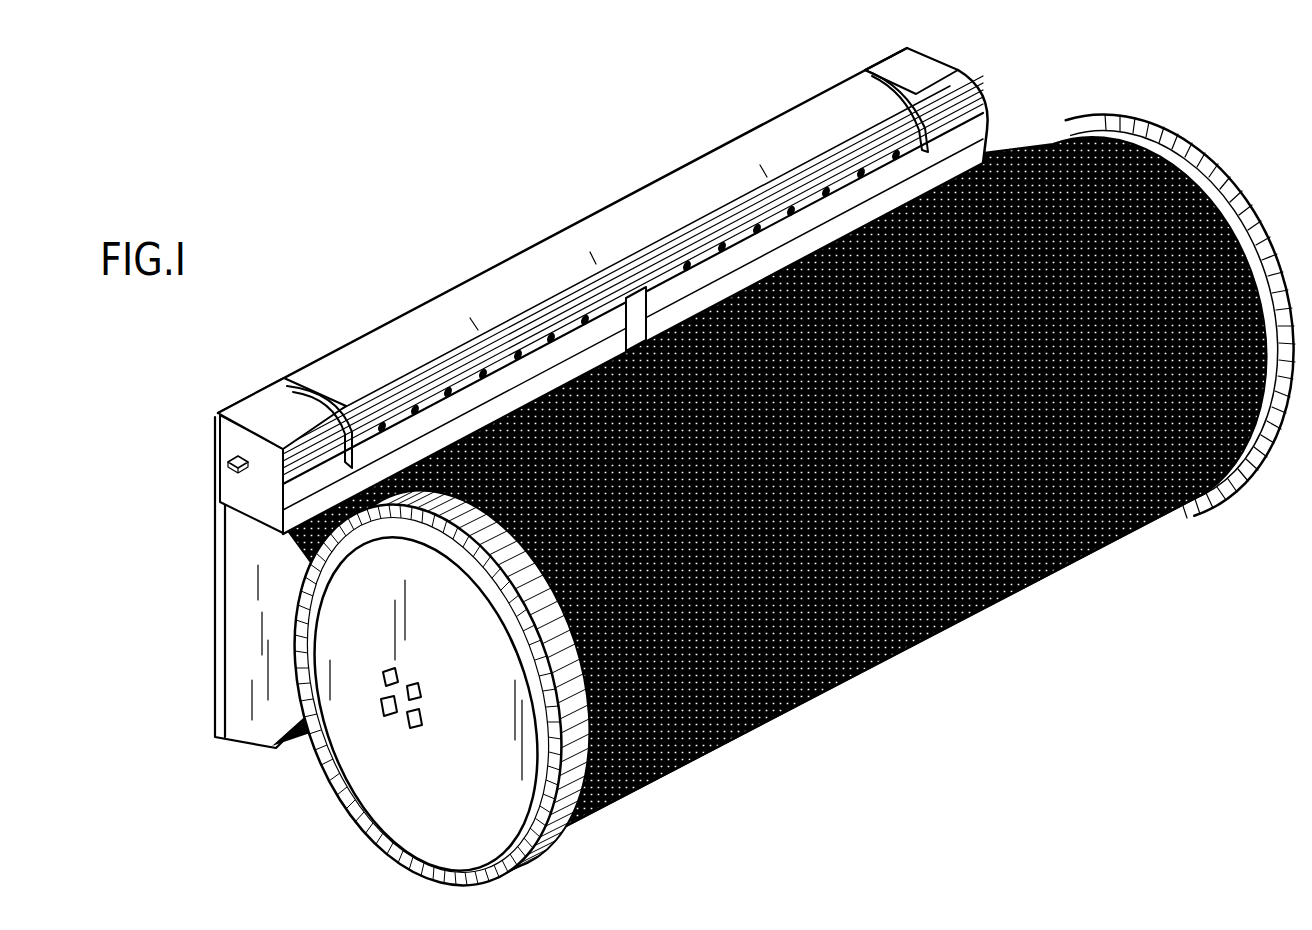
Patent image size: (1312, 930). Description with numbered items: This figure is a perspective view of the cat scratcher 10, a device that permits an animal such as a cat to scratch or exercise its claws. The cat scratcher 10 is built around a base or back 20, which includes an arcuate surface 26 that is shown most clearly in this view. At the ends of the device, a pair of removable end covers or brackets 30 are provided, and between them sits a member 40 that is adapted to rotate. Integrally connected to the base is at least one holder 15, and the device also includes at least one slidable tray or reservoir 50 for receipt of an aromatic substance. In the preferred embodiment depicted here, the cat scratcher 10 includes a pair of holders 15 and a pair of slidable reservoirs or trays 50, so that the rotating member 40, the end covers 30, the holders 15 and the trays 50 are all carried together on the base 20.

The cat scratcher 10 is at (722, 470).
The holder 15 is at (727, 288).
The base 20 is at (217, 578).
The arcuate surface 26 is at (512, 300).
The end cover 30 is at (1214, 232).
The rotatable member 40 is at (1012, 602).
The slidable tray 50 is at (270, 424).